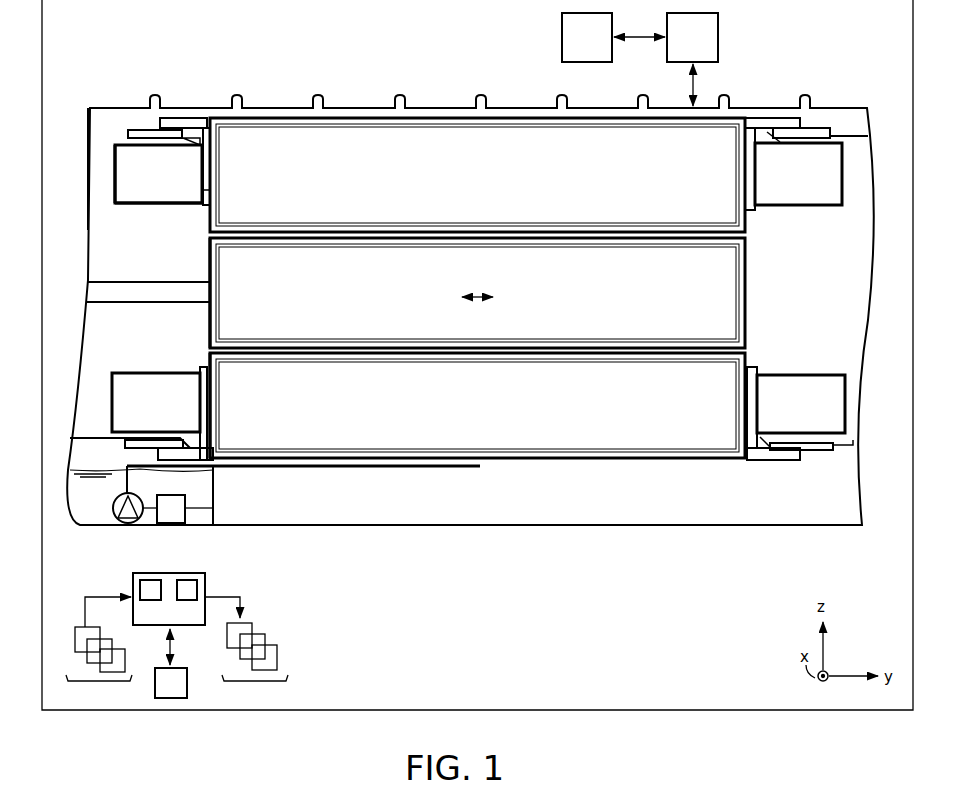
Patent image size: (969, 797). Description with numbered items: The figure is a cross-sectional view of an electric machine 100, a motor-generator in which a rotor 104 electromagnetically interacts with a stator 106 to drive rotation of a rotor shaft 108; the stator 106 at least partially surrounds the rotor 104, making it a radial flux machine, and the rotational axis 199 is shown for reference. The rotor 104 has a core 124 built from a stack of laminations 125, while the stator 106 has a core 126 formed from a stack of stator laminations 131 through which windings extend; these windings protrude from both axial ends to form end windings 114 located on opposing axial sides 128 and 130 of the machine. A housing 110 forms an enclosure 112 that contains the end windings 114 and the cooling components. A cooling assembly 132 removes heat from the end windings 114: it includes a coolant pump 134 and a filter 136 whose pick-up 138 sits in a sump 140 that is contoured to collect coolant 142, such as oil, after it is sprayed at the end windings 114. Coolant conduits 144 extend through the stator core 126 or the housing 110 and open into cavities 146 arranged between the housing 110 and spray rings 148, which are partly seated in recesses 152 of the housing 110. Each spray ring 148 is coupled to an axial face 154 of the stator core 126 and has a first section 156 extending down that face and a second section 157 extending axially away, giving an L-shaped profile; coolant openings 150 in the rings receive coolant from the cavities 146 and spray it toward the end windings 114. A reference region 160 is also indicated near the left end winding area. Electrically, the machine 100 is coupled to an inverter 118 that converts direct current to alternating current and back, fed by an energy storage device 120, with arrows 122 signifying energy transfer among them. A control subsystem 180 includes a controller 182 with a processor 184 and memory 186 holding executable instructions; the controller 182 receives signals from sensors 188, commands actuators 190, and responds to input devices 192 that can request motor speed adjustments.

The electric machine 100 is at (88, 62).
The rotor 104 is at (207, 256).
The stator 106 is at (106, 180).
The rotor shaft 108 is at (137, 290).
The housing 110 is at (140, 116).
The enclosure 112 is at (106, 152).
The stator end windings 114 is at (128, 206).
The inverter 118 is at (720, 37).
The energy storage device 120 is at (561, 37).
The arrows 122 is at (643, 36).
The rotor core 124 is at (209, 272).
The stack of laminations 125 is at (426, 278).
The stator core 126 is at (209, 362).
The first axial side 128 is at (88, 192).
The second axial side 130 is at (854, 188).
The stack of stator laminations 131 is at (516, 403).
The cooling assembly 132 is at (100, 513).
The coolant pump 134 is at (128, 524).
The filter 136 is at (164, 495).
The pick-up 138 is at (200, 514).
The sump 140 is at (90, 455).
The coolant 142 is at (108, 502).
The coolant conduits 144 is at (316, 470).
The cavities 146 is at (168, 122).
The spray rings 148 is at (204, 208).
The coolant openings 150 is at (190, 130).
The recesses 152 is at (130, 141).
The axial face 154 is at (200, 196).
The first section 156 is at (212, 170).
The second section 157 is at (143, 128).
The side wall 160 is at (124, 190).
The control subsystem 180 is at (266, 578).
The controller 182 is at (158, 573).
The processor 184 is at (139, 590).
The memory 186 is at (193, 580).
The sensors 188 is at (99, 666).
The actuators 190 is at (255, 664).
The input devices 192 is at (187, 676).
The rotational axis 199 is at (478, 300).